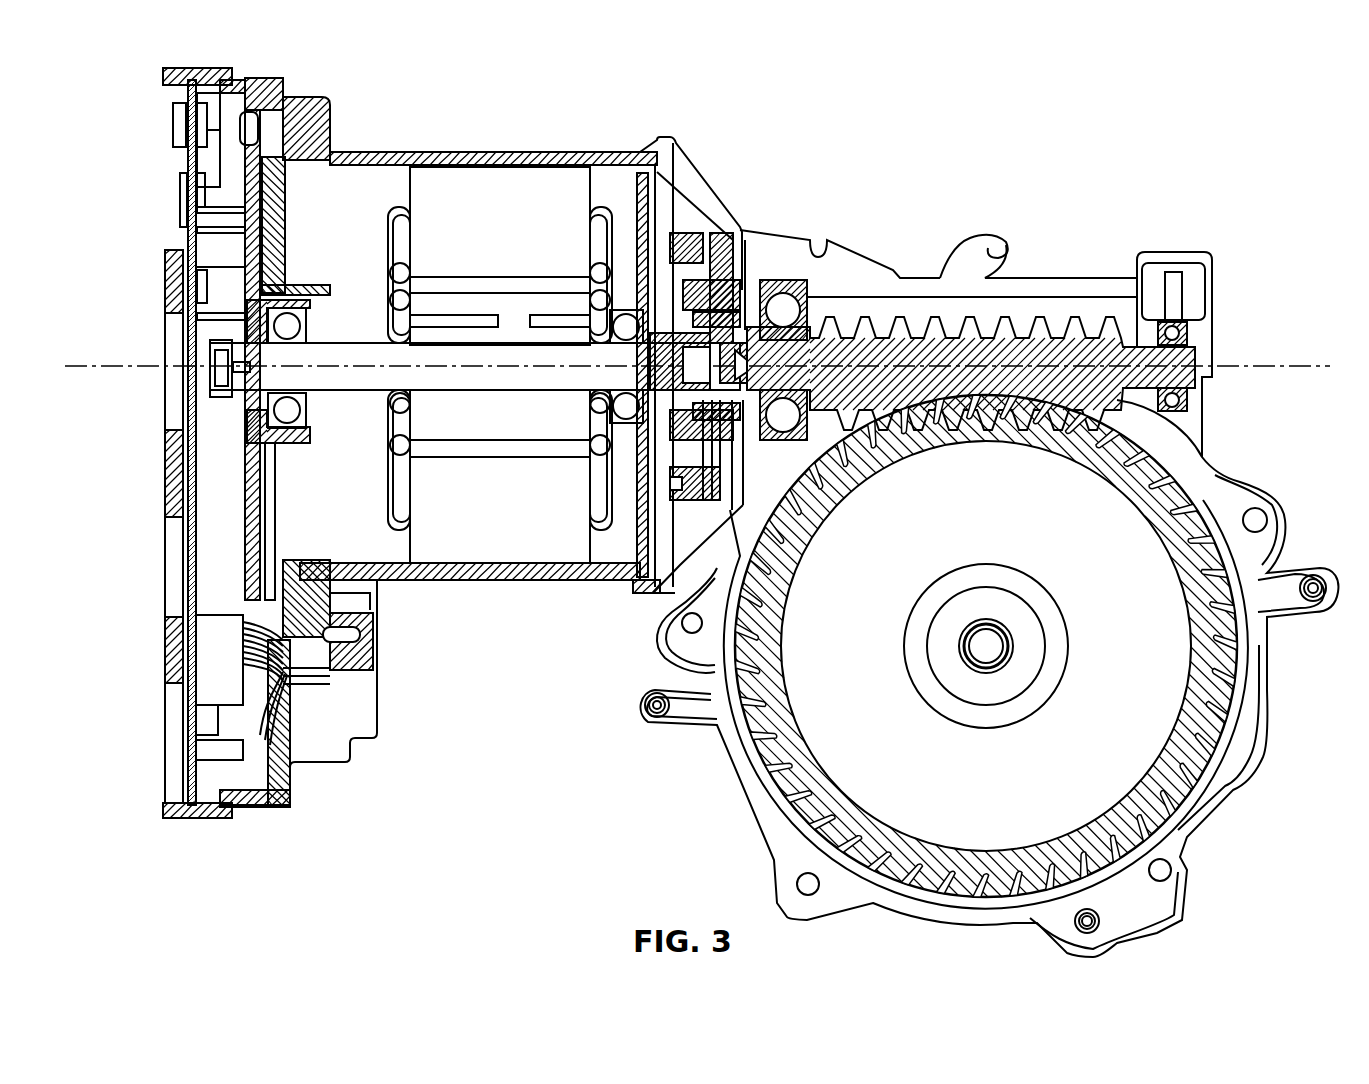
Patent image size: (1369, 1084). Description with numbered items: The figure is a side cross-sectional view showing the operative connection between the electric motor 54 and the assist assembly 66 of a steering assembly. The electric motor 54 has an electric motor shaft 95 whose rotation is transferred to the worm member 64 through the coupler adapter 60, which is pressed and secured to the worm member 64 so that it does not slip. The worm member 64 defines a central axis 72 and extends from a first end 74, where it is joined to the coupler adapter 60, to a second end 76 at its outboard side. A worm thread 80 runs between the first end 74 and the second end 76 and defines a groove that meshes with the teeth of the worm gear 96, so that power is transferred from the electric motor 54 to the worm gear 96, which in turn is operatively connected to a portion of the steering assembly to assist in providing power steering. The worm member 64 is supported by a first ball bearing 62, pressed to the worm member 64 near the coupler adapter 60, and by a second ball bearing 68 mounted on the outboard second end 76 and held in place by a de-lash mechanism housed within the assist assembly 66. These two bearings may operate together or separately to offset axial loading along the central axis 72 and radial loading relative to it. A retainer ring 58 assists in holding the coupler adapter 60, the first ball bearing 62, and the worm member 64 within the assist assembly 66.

The electric motor 54 is at (302, 95).
The electric motor shaft 95 is at (465, 342).
The coupler adapter 60 is at (706, 310).
The retainer ring 58 is at (745, 300).
The first end 74 is at (750, 297).
The first ball bearing 62 is at (787, 278).
The worm thread 80 is at (898, 310).
The worm member 64 is at (1095, 347).
The assist assembly 66 is at (1218, 250).
The central axis 72 is at (103, 365).
The second end 76 is at (1177, 417).
The second ball bearing 68 is at (1213, 447).
The worm gear 96 is at (1145, 817).